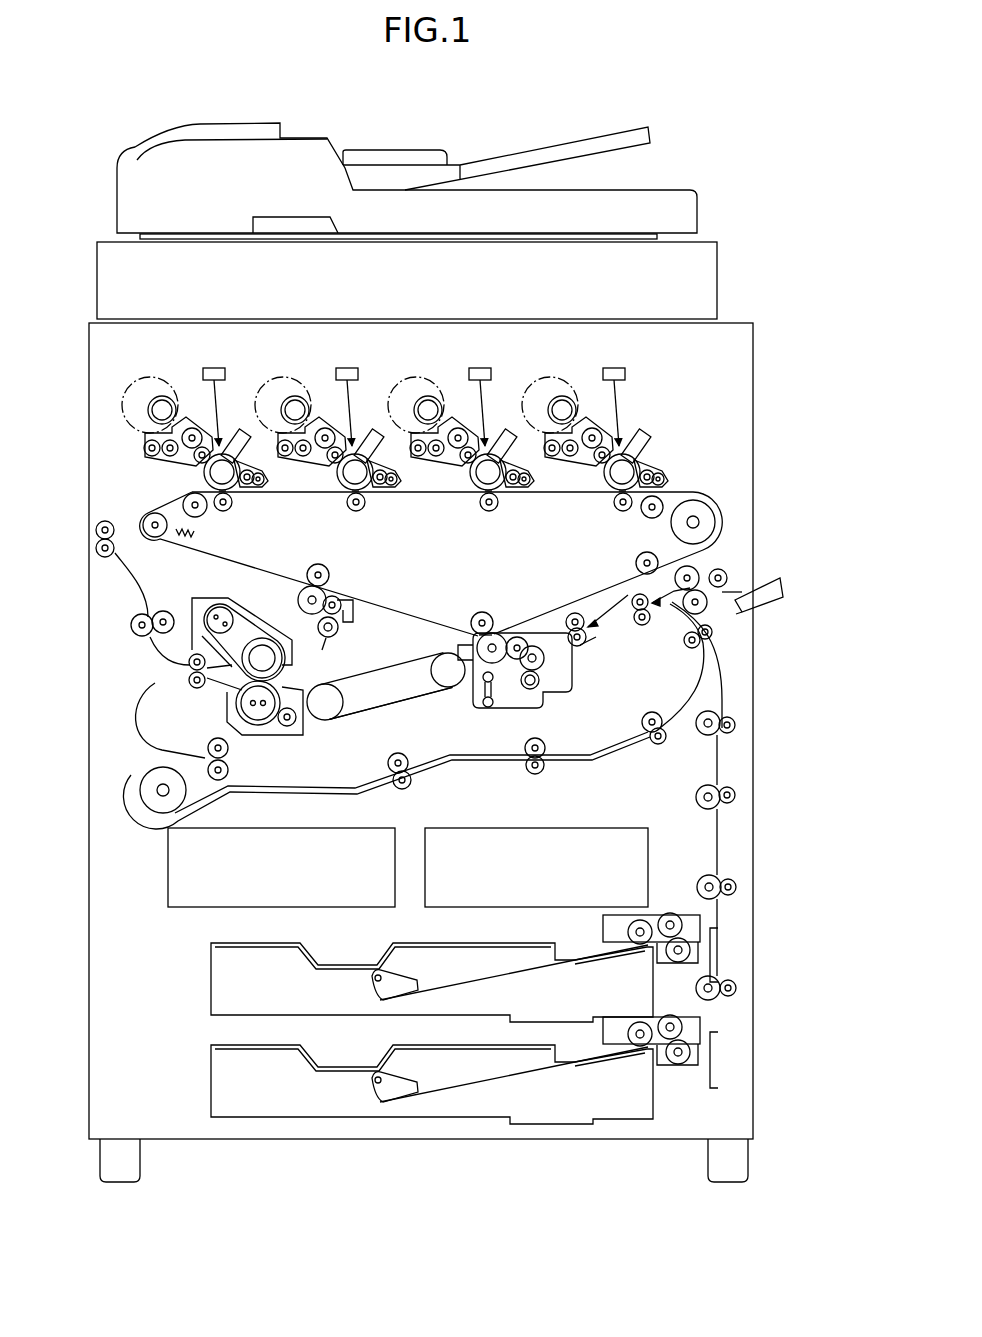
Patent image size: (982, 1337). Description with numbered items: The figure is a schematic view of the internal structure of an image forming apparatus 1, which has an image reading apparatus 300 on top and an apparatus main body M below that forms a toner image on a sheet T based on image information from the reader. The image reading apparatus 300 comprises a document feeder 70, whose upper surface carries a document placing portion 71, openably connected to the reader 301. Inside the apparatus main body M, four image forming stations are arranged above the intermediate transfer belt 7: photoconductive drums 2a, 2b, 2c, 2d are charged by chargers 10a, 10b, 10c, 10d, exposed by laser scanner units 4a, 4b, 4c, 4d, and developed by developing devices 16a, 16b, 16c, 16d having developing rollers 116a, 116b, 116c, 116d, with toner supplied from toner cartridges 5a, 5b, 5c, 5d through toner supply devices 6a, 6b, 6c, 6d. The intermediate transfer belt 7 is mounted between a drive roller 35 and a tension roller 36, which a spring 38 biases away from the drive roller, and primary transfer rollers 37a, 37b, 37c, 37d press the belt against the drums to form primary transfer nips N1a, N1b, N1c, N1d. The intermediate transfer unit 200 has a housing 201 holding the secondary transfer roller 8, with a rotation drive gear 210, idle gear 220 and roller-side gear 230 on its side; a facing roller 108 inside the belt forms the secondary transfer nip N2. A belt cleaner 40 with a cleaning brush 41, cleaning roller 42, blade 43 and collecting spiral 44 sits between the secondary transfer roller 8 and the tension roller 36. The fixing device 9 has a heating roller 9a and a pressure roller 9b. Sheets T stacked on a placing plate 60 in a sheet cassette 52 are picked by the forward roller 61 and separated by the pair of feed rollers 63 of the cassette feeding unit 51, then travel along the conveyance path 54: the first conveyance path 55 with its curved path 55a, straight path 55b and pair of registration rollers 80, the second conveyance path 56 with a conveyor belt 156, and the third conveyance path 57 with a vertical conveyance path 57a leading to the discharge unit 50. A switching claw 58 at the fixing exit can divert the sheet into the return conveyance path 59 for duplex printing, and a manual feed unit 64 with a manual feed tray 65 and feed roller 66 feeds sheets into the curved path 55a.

The image forming apparatus 1 is at (690, 141).
The document feeder 70 is at (300, 140).
The document placing portion 71 is at (462, 157).
The image reading apparatus 300 is at (703, 186).
The reader 301 is at (705, 243).
The apparatus main body M is at (738, 322).
The toner cartridge 5a is at (150, 376).
The toner cartridge 5b is at (283, 379).
The toner cartridge 5c is at (416, 379).
The toner cartridge 5d is at (550, 379).
The toner supply device 6a is at (166, 396).
The toner supply device 6b is at (303, 385).
The toner supply device 6c is at (436, 385).
The toner supply device 6d is at (570, 385).
The laser scanner unit 4a is at (214, 368).
The laser scanner unit 4b is at (349, 387).
The laser scanner unit 4c is at (484, 387).
The laser scanner unit 4d is at (618, 387).
The charger 10a is at (233, 430).
The charger 10b is at (369, 423).
The charger 10c is at (505, 423).
The charger 10d is at (639, 423).
The developing device 16a is at (194, 428).
The developing device 16b is at (334, 416).
The developing device 16c is at (467, 416).
The developing device 16d is at (601, 416).
The developing roller 116a is at (192, 463).
The developing roller 116b is at (339, 454).
The developing roller 116c is at (472, 453).
The developing roller 116d is at (606, 453).
The photoconductive drum 2a is at (205, 480).
The photoconductive drum 2b is at (335, 484).
The photoconductive drum 2c is at (468, 484).
The photoconductive drum 2d is at (601, 484).
The primary transfer nip N1a is at (228, 492).
The primary transfer nip N1b is at (327, 512).
The primary transfer nip N1c is at (462, 512).
The primary transfer nip N1d is at (594, 512).
The primary transfer roller 37a is at (232, 510).
The primary transfer roller 37b is at (351, 523).
The primary transfer roller 37c is at (486, 523).
The primary transfer roller 37d is at (619, 523).
The intermediate transfer belt 7 is at (370, 494).
The tension roller 36 is at (150, 514).
The spring 38 is at (193, 533).
The drive roller 35 is at (700, 503).
The discharge unit 50 is at (96, 529).
The vertical conveyance path 57a is at (140, 567).
The third conveyance path 57 is at (153, 592).
The switching claw 58 is at (170, 660).
The fixing device 9 is at (272, 677).
The heating roller 9a is at (268, 636).
The pressure roller 9b is at (258, 730).
The cleaning brush 41 is at (334, 583).
The cleaning roller 42 is at (352, 602).
The belt cleaner 40 is at (355, 615).
The blade 43 is at (338, 638).
The collecting spiral 44 is at (324, 642).
The second conveyance path 56 is at (398, 662).
The conveyor belt 156 is at (382, 716).
The facing roller 108 is at (487, 611).
The secondary transfer nip N2 is at (492, 632).
The secondary transfer roller 8 is at (477, 643).
The idle gear 220 is at (502, 692).
The roller-side gear 230 is at (483, 692).
The intermediate transfer unit 200 is at (560, 666).
The housing 201 is at (552, 660).
The rotation drive gear 210 is at (546, 685).
The pair of registration rollers 80 is at (589, 635).
The straight path 55b is at (641, 626).
The feed roller 66 is at (724, 569).
The manual feed unit 64 is at (762, 580).
The manual feed tray 65 is at (755, 605).
The curved path 55a is at (717, 652).
The conveyance path 54 is at (727, 697).
The first conveyance path 55 is at (725, 740).
The return conveyance path 59 is at (303, 795).
The sheet cassette 52 is at (210, 989).
The placing plate 60 is at (516, 975).
The sheet T is at (235, 990).
The forward roller 61 is at (646, 918).
The pair of feed rollers 63 is at (675, 921).
The cassette feeding unit 51 is at (700, 950).